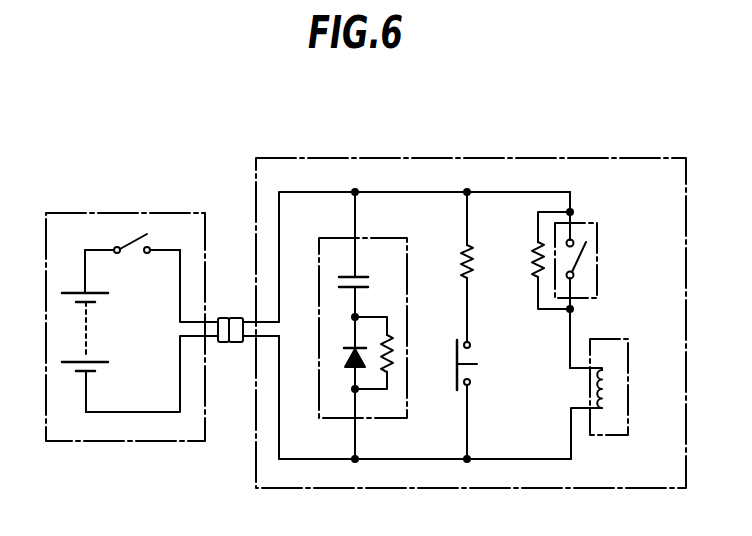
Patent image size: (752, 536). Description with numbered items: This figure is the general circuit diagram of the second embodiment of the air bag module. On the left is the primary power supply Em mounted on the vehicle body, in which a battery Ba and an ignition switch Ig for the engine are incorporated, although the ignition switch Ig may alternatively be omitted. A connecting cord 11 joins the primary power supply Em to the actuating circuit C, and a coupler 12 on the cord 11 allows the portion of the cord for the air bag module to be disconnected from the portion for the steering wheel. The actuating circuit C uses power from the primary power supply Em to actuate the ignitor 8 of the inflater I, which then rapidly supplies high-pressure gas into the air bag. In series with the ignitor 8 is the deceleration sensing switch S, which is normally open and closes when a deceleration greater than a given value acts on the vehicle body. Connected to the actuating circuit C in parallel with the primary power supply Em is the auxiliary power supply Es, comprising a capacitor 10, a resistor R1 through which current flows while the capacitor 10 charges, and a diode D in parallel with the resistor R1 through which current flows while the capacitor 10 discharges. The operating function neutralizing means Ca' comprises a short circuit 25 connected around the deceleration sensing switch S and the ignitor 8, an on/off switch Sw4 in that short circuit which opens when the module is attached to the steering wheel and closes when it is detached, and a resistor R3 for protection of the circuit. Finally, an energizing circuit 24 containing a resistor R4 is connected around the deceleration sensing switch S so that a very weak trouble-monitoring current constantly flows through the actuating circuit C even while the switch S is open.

The primary power supply Em is at (168, 446).
The battery Ba is at (102, 360).
The ignition switch Ig is at (141, 252).
The coupler 12 is at (226, 318).
The connecting cord 11 is at (242, 343).
The capacitor 10 is at (361, 277).
The diode D is at (352, 359).
The resistor R1 is at (395, 351).
The auxiliary power supply Es is at (408, 412).
The operating function neutralizing means Ca' is at (439, 217).
The resistor R3 is at (462, 268).
The on/off switch Sw4 is at (473, 362).
The short circuit 25 is at (469, 398).
The energizing circuit 24 is at (538, 219).
The resistor R4 is at (532, 268).
The deceleration sensing switch S is at (598, 238).
The inflater I is at (634, 360).
The ignitor 8 is at (604, 386).
The actuating circuit C is at (564, 432).